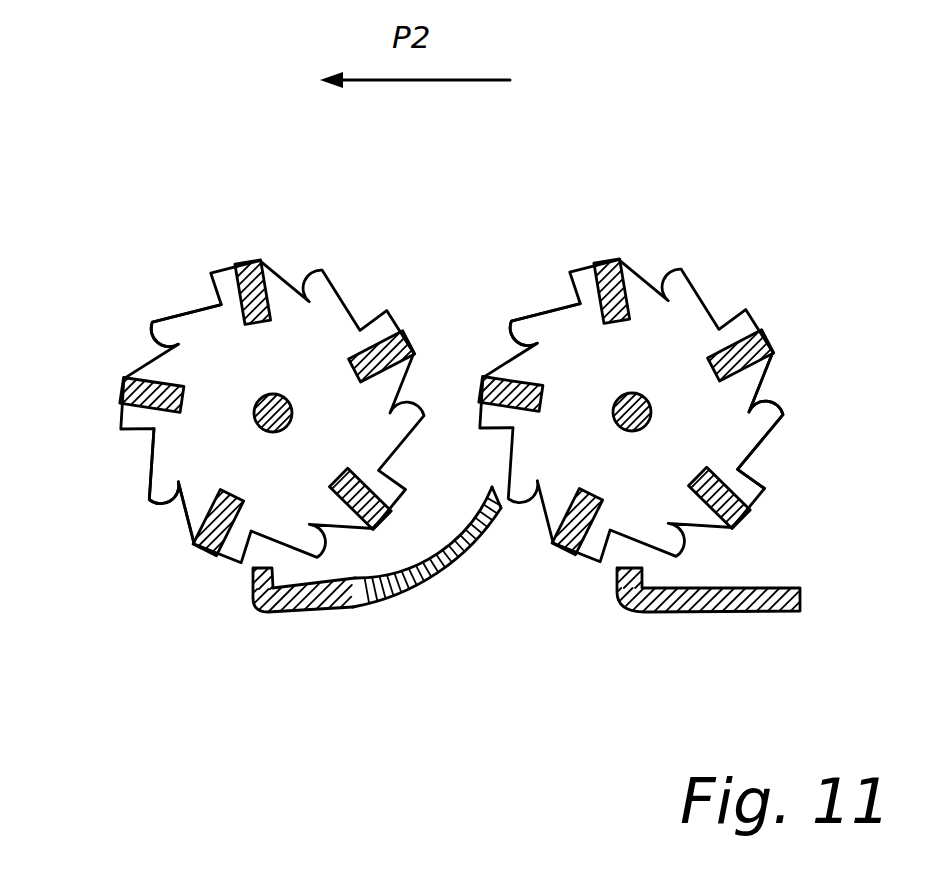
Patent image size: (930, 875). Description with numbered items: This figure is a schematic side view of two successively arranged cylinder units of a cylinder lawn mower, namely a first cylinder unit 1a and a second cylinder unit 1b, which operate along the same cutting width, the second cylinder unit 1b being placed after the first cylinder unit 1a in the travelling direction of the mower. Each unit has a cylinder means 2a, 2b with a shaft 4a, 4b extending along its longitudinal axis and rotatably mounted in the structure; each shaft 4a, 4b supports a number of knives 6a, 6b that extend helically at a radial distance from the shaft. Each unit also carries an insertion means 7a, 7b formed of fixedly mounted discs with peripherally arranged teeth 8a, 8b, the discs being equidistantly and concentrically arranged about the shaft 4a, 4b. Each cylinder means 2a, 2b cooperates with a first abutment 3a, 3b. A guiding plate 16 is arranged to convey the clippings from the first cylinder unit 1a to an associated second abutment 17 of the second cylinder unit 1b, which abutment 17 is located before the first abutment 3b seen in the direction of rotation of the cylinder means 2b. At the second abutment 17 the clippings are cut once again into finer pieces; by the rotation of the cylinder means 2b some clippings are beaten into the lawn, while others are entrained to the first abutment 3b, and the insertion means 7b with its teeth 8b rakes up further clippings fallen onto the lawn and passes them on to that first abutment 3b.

The first cylinder unit 1a is at (316, 213).
The second cylinder unit 1b is at (648, 211).
The cylinder means of first cylinder unit 2a is at (323, 347).
The cylinder means of second cylinder unit 2b is at (668, 340).
The first abutment of first cylinder unit 3a is at (289, 613).
The first abutment of second cylinder unit 3b is at (717, 608).
The shaft of first cylinder unit 4a is at (255, 407).
The shaft of second cylinder unit 4b is at (653, 398).
The knives of first cylinder unit 6a is at (250, 275).
The knives of second cylinder unit 6b is at (747, 347).
The insertion means of first cylinder unit 7a is at (182, 305).
The insertion means of second cylinder unit 7b is at (542, 299).
The teeth of first cylinder unit 8a is at (193, 515).
The teeth of second cylinder unit 8b is at (737, 470).
The guiding plate 16 is at (421, 580).
The second abutment 17 is at (500, 510).